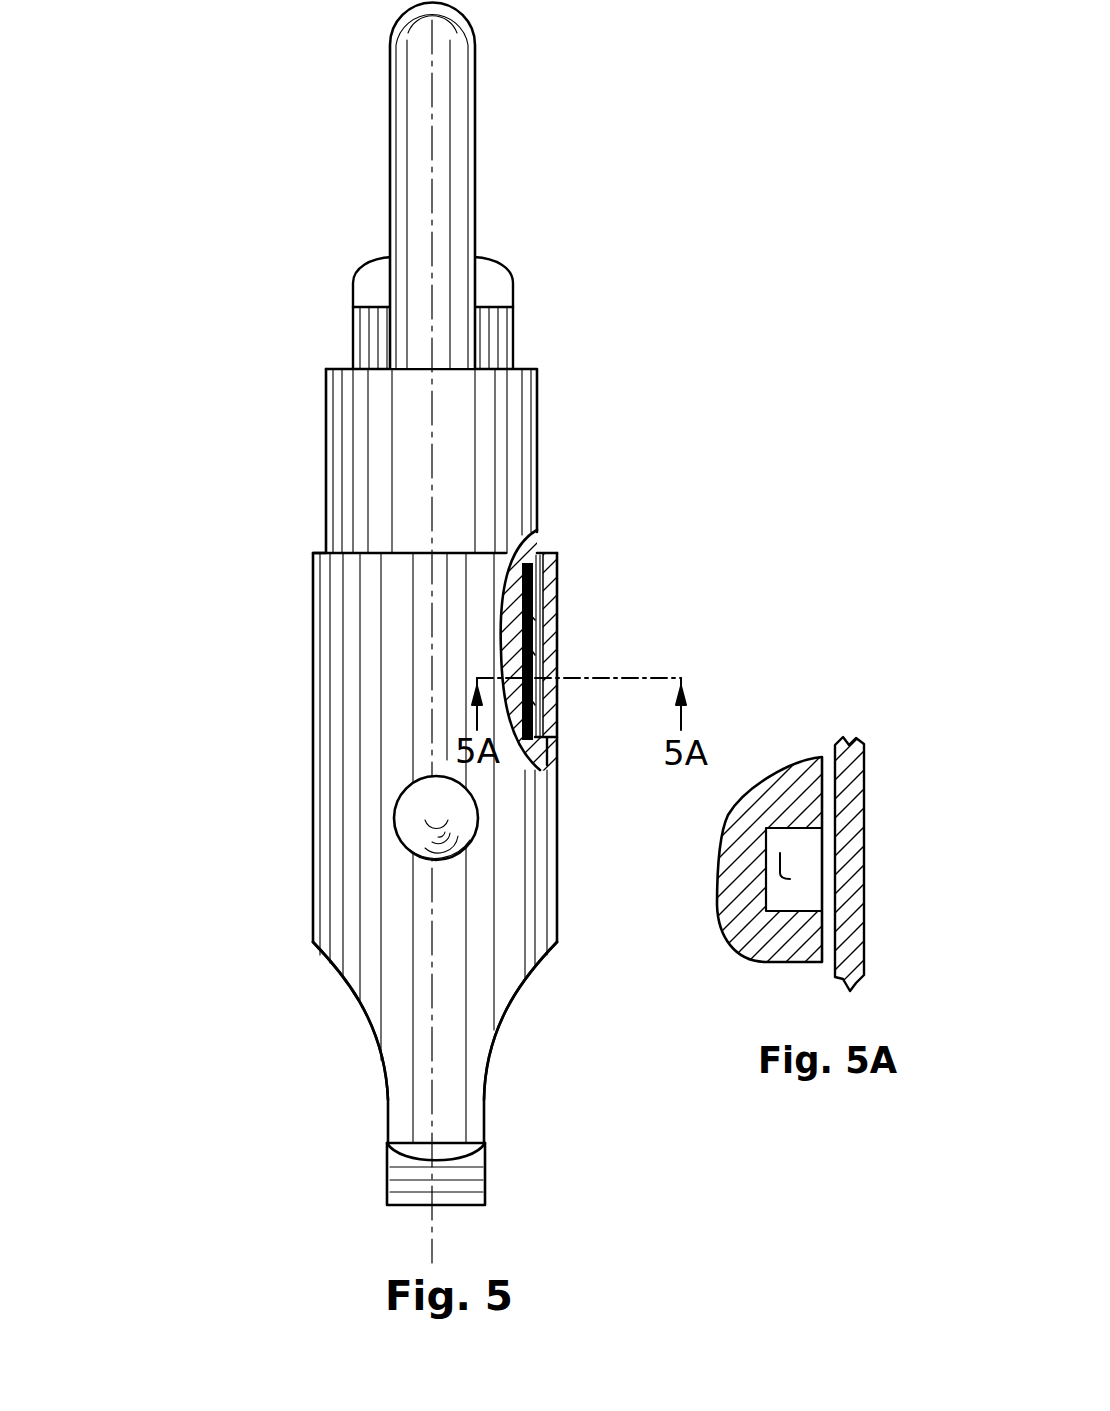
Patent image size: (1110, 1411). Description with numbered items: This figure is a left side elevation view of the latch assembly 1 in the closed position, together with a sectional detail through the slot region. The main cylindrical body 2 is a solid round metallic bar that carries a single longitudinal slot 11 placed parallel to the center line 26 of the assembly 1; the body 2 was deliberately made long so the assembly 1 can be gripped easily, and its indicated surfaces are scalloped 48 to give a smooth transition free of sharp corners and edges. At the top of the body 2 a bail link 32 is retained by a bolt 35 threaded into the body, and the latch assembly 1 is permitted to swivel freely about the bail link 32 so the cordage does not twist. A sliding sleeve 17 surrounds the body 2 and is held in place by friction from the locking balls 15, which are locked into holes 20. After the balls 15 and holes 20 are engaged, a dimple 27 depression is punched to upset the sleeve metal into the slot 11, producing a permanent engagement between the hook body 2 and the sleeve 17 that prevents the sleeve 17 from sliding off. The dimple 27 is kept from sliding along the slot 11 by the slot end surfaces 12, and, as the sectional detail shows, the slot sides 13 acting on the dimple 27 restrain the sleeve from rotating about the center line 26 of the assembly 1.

In FIG. 5, the latch assembly 1 is at (190, 340).
In FIG. 5, the main cylindrical body 2 is at (537, 492).
In FIG. 5A, the main cylindrical body 2 is at (775, 771).
In FIG. 5, the longitudinal slot 11 is at (545, 650).
In FIG. 5, the slot end surfaces 12 is at (532, 594).
In FIG. 5A, the slot end surfaces 12 is at (789, 877).
In FIG. 5, the slot sides 13 is at (540, 625).
In FIG. 5A, the slot sides 13 is at (795, 833).
In FIG. 5, the ball 15 is at (417, 808).
In FIG. 5, the sliding sleeve 17 is at (562, 570).
In FIG. 5A, the sliding sleeve 17 is at (847, 742).
In FIG. 5, the hole 20 is at (410, 850).
In FIG. 5, the center line 26 is at (430, 140).
In FIG. 5, the dimple 27 is at (532, 700).
In FIG. 5, the bail link 32 is at (475, 43).
In FIG. 5, the bolt 35 is at (513, 280).
In FIG. 5, the scalloped surface 48 is at (347, 1003).